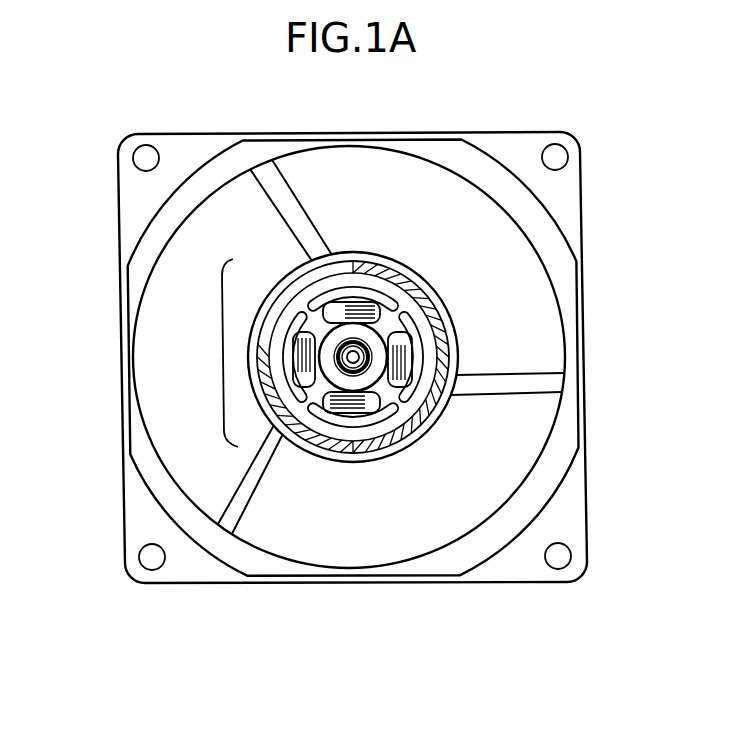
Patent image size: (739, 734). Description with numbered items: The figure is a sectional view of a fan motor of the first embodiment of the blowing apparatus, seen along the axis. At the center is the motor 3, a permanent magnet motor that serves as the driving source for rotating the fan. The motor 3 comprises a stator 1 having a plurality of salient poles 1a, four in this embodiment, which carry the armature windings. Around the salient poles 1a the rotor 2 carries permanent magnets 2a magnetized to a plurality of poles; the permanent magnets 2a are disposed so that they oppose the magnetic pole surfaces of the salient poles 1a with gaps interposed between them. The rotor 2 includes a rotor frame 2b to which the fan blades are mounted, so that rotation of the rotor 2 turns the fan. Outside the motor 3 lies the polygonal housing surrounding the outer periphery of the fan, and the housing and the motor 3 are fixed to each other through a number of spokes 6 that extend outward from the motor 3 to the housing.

The stator 1 is at (378, 302).
The salient poles 1a is at (420, 356).
The rotor 2 is at (441, 413).
The permanent magnets 2a is at (258, 368).
The rotor frame 2b is at (267, 302).
The motor 3 is at (220, 362).
The spokes 6 is at (245, 497).